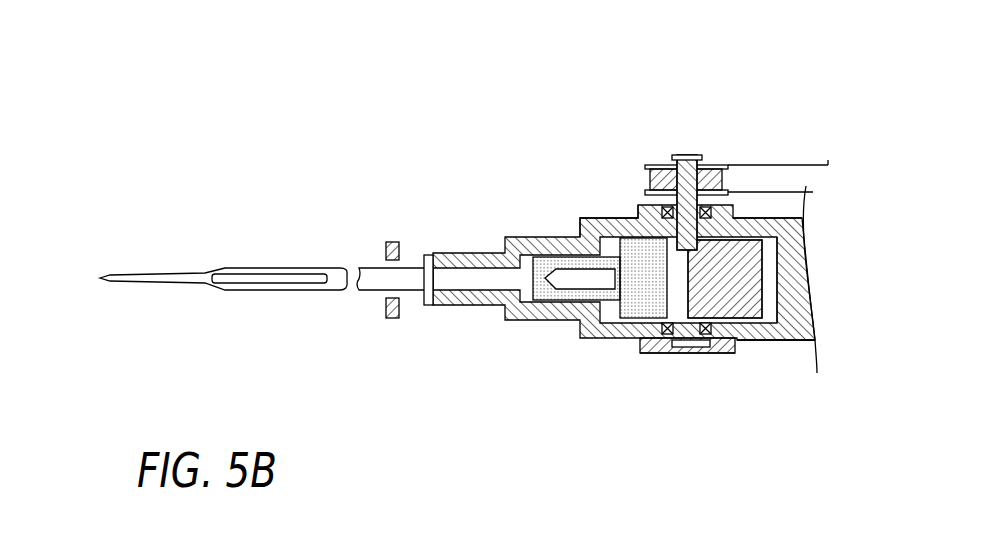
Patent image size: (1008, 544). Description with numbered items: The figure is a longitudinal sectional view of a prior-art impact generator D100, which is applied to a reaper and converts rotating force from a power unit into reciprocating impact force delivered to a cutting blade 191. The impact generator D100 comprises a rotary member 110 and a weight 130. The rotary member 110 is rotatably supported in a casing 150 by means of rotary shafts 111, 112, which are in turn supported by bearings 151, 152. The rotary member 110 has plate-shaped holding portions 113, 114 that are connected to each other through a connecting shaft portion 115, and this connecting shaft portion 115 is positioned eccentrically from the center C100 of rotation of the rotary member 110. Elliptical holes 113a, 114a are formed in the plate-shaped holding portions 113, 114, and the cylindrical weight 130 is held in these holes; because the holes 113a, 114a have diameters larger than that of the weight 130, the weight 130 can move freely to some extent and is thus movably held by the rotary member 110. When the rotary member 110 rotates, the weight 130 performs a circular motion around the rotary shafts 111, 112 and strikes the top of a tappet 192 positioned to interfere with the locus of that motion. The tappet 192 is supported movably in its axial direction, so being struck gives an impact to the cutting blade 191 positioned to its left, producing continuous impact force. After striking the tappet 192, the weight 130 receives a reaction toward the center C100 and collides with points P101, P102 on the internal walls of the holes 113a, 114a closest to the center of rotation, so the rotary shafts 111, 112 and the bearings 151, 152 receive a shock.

The impact generator D100 is at (515, 135).
The center of rotation C100 is at (687, 155).
The rotary shaft 111 is at (767, 243).
The elliptical hole 113a is at (638, 218).
The bearing 151 is at (733, 233).
The collision point P101 is at (797, 240).
The plate-shaped holding portion 113 is at (767, 247).
The rotary member 110 is at (765, 262).
The connecting shaft portion 115 is at (740, 278).
The plate-shaped holding portion 114 is at (745, 330).
The cutting blade 191 is at (280, 290).
The tappet 192 is at (547, 320).
The weight 130 is at (640, 313).
The casing 150 is at (643, 348).
The elliptical hole 114a is at (662, 353).
The rotary shaft 112 is at (680, 350).
The bearing 152 is at (728, 348).
The collision point P102 is at (753, 342).